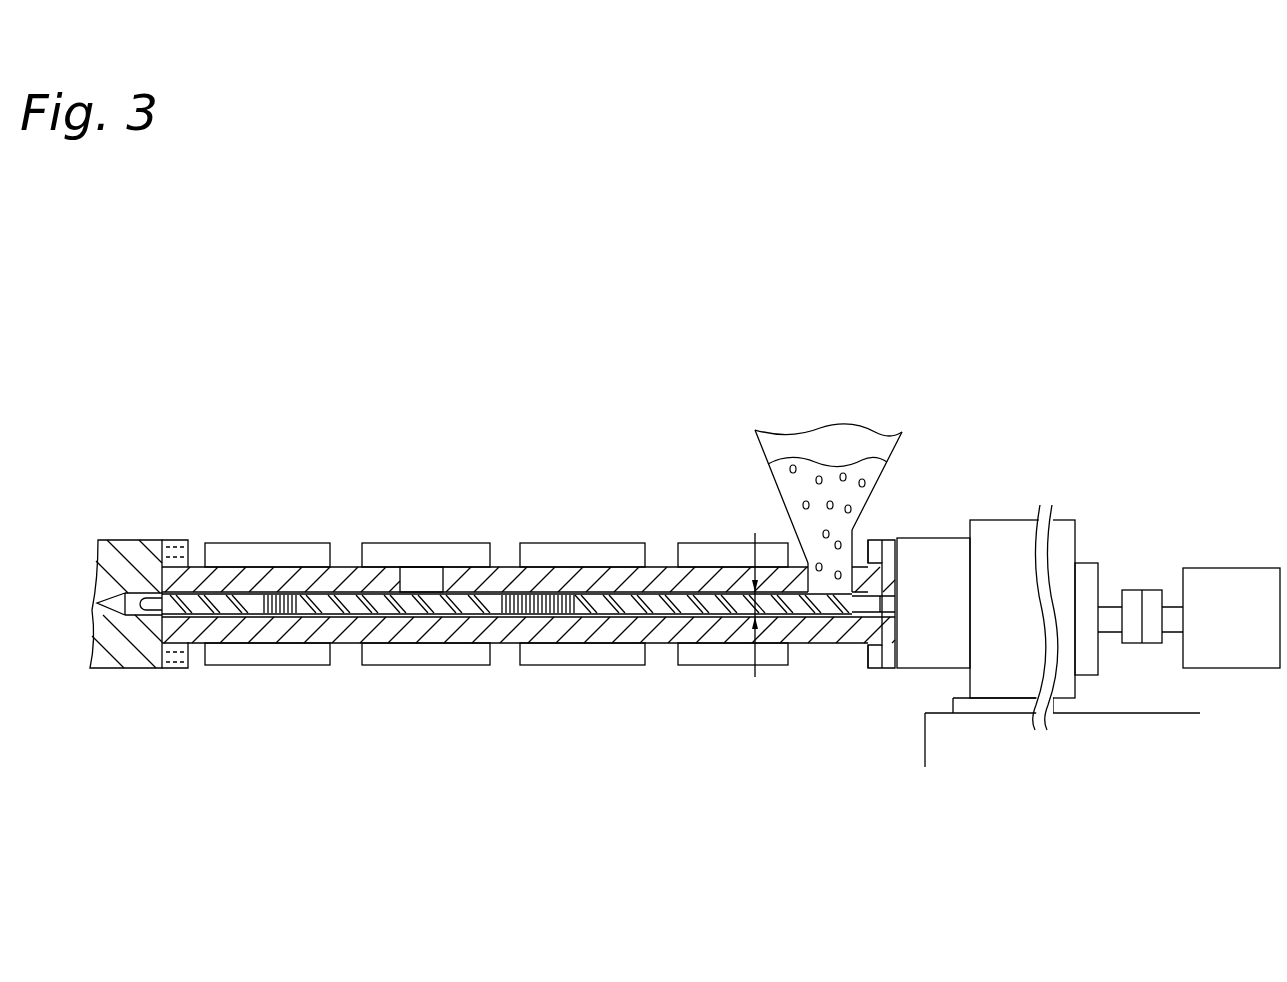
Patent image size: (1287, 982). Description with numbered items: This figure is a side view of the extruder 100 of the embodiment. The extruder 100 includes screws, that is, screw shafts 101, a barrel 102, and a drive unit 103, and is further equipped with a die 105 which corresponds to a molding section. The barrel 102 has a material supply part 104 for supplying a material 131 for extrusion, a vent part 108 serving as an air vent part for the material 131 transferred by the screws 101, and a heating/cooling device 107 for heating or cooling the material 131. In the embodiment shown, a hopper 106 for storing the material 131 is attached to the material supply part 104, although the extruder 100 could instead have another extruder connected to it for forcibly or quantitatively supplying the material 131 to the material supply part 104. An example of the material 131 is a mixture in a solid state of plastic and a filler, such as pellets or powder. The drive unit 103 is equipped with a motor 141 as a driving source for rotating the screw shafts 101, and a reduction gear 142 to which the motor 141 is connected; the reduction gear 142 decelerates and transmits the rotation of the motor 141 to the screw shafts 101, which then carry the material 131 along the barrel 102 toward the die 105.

The extruder 100 is at (974, 316).
The screw 101 is at (628, 588).
The barrel 102 is at (292, 577).
The drive unit 103 is at (1103, 490).
The material supply part 104 is at (815, 578).
The die 105 is at (133, 547).
The hopper 106 is at (795, 425).
The heating/cooling device 107 is at (268, 655).
The vent part 108 is at (422, 572).
The material 131 is at (877, 480).
The motor 141 is at (1214, 568).
The reduction gear 142 is at (990, 520).